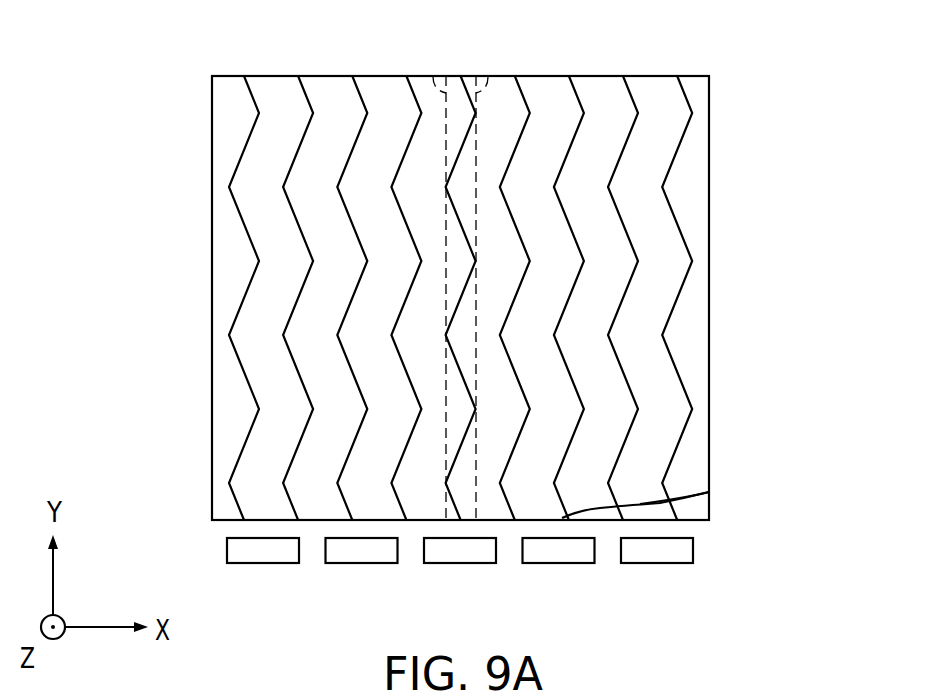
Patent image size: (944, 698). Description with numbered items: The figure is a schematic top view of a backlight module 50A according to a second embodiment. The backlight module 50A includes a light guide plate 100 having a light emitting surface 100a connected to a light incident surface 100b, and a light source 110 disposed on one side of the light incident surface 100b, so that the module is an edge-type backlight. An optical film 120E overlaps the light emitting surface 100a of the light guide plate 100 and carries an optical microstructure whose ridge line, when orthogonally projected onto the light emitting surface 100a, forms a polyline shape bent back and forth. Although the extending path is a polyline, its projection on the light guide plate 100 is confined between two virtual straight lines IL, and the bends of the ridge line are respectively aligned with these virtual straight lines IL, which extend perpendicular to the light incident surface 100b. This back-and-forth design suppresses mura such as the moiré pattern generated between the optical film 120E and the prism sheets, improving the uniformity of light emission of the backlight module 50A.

The backlight module 50A is at (845, 633).
The light guide plate 100 is at (711, 505).
The light emitting surface 100a is at (689, 503).
The light incident surface 100b is at (701, 527).
The light source 110 is at (537, 563).
The optical film 120E is at (627, 509).
The virtual straight lines IL is at (482, 68).